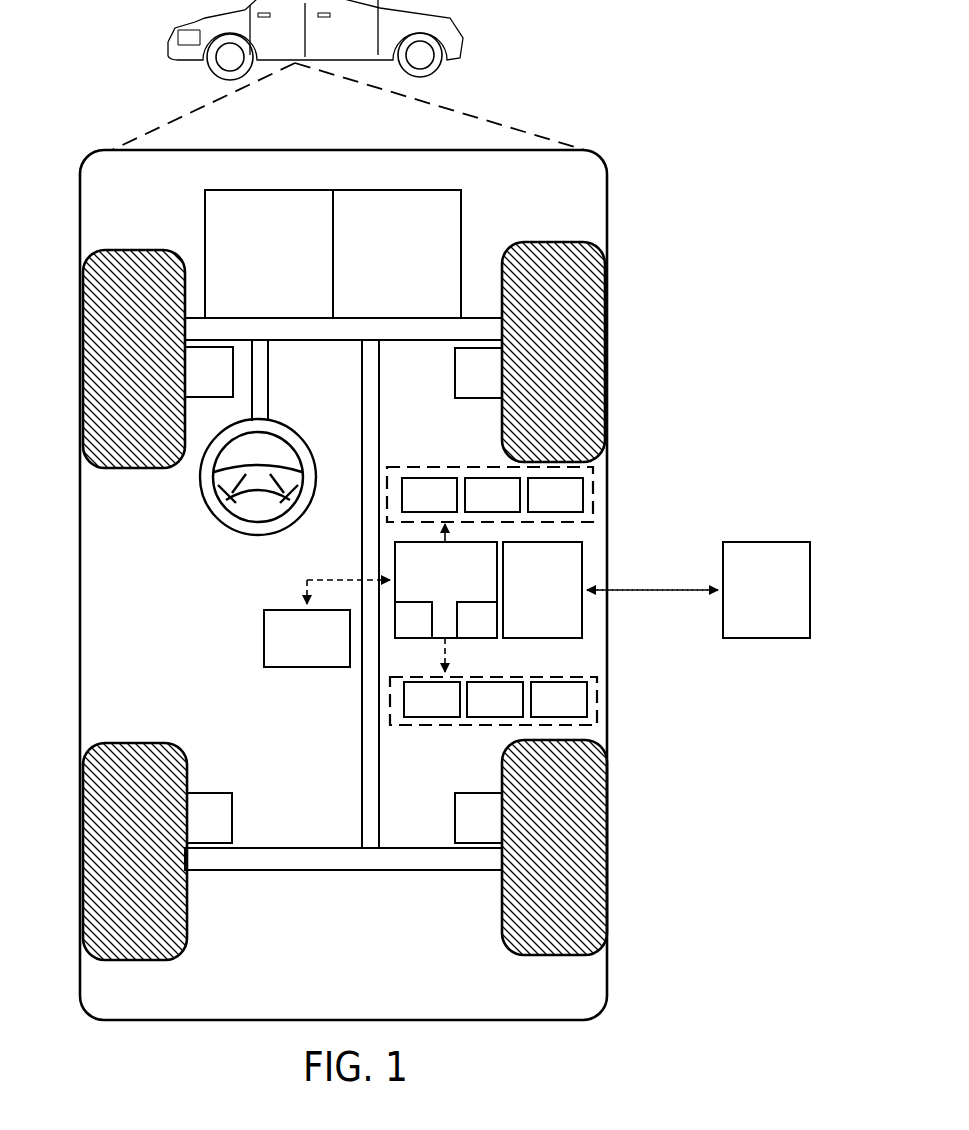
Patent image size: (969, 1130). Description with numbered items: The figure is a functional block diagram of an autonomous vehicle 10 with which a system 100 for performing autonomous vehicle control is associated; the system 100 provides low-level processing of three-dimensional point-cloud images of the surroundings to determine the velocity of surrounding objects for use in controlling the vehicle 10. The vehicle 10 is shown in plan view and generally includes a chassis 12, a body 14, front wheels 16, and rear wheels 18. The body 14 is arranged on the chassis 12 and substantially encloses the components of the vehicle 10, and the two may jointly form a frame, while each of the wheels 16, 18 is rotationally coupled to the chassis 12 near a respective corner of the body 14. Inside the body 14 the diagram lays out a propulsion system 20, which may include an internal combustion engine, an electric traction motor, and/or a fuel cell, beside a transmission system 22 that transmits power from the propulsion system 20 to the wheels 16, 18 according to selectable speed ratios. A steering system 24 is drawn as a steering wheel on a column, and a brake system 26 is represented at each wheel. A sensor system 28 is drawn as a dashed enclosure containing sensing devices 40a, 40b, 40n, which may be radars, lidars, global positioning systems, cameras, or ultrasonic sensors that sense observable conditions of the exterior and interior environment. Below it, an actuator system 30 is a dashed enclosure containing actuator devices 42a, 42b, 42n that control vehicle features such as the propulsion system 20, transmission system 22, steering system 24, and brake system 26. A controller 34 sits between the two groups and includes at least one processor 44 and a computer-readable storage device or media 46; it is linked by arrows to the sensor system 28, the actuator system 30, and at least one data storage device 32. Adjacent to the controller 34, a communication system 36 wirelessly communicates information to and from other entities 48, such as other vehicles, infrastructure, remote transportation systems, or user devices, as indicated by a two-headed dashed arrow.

The vehicle 10 is at (168, 42).
The system for performing an autonomous vehicle control 100 is at (622, 157).
The chassis 12 is at (362, 725).
The body 14 is at (80, 590).
The front wheels 16 is at (120, 250).
The rear wheels 18 is at (140, 961).
The propulsion system 20 is at (255, 265).
The transmission system 22 is at (383, 265).
The steering system 24 is at (281, 362).
The brake system 26 is at (197, 384).
The sensor system 28 is at (400, 467).
The actuator system 30 is at (425, 727).
The data storage device 32 is at (293, 650).
The controller 34 is at (432, 597).
The communication system 36 is at (528, 597).
The sensing device 40a is at (447, 506).
The sensing device 40b is at (510, 506).
The sensing device 40n is at (573, 506).
The actuator device 42a is at (414, 710).
The actuator device 42b is at (477, 710).
The actuator device 42n is at (541, 710).
The processor 44 is at (402, 631).
The computer-readable storage device or media 46 is at (466, 631).
The other entities 48 is at (752, 597).